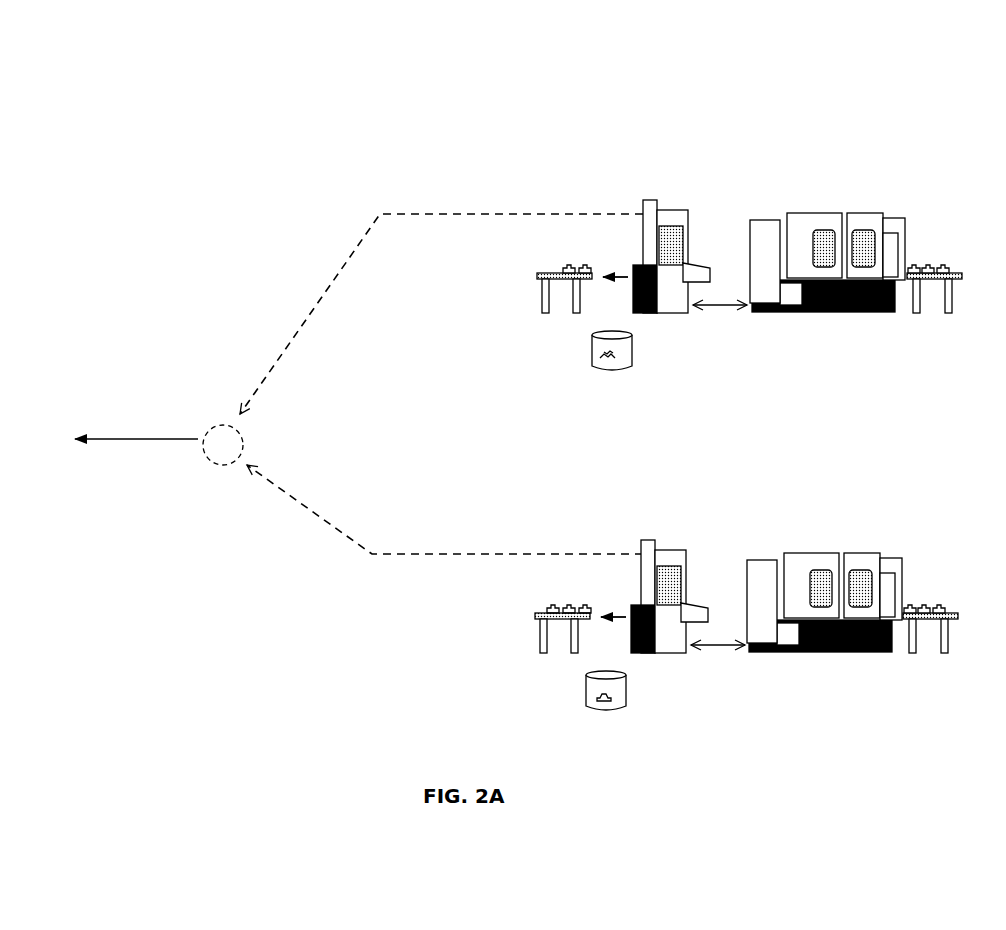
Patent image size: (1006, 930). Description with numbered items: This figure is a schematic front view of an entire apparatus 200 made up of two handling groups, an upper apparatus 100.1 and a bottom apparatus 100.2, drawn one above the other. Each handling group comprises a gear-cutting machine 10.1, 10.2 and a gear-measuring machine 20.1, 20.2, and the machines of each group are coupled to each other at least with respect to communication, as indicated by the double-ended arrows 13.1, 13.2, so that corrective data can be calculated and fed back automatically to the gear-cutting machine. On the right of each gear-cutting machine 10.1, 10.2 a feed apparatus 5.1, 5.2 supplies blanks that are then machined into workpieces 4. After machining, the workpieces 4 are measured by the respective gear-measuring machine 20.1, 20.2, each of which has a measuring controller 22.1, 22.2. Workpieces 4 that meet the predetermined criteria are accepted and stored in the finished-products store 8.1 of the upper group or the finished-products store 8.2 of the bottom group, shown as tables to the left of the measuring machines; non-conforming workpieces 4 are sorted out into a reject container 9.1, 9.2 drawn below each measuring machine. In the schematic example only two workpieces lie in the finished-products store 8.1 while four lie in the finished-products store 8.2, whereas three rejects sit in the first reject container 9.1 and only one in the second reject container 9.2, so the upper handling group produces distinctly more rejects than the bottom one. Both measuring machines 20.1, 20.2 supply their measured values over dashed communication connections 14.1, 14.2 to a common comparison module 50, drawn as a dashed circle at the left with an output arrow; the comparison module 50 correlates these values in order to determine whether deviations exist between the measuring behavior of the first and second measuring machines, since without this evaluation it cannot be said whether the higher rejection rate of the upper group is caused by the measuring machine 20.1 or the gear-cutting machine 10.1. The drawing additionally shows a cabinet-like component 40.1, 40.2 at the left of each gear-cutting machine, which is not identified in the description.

The entire apparatus 200 is at (362, 132).
The apparatus 100.1 is at (757, 128).
The apparatus 100.2 is at (757, 490).
The comparison module 50 is at (223, 445).
The communication connection 14.1 is at (383, 212).
The communication connection 14.2 is at (374, 552).
The finished-products store 8.1 is at (535, 260).
The finished-products store 8.2 is at (525, 587).
The workpieces 4 is at (582, 260).
The gear-measuring machine 20.1 is at (672, 210).
The gear-measuring machine 20.2 is at (689, 585).
The measuring controller 22.1 is at (694, 268).
The measuring controller 22.2 is at (714, 598).
The double-ended arrow 13.1 is at (720, 308).
The double-ended arrow 13.2 is at (716, 671).
The gear-cutting machine 10.1 is at (855, 247).
The gear-cutting machine 10.2 is at (853, 587).
The first control cabinet 40.1 is at (760, 221).
The second control cabinet 40.2 is at (782, 582).
The feed apparatus 5.1 is at (922, 250).
The feed apparatus 5.2 is at (951, 612).
The reject container 9.1 is at (633, 352).
The reject container 9.2 is at (627, 709).